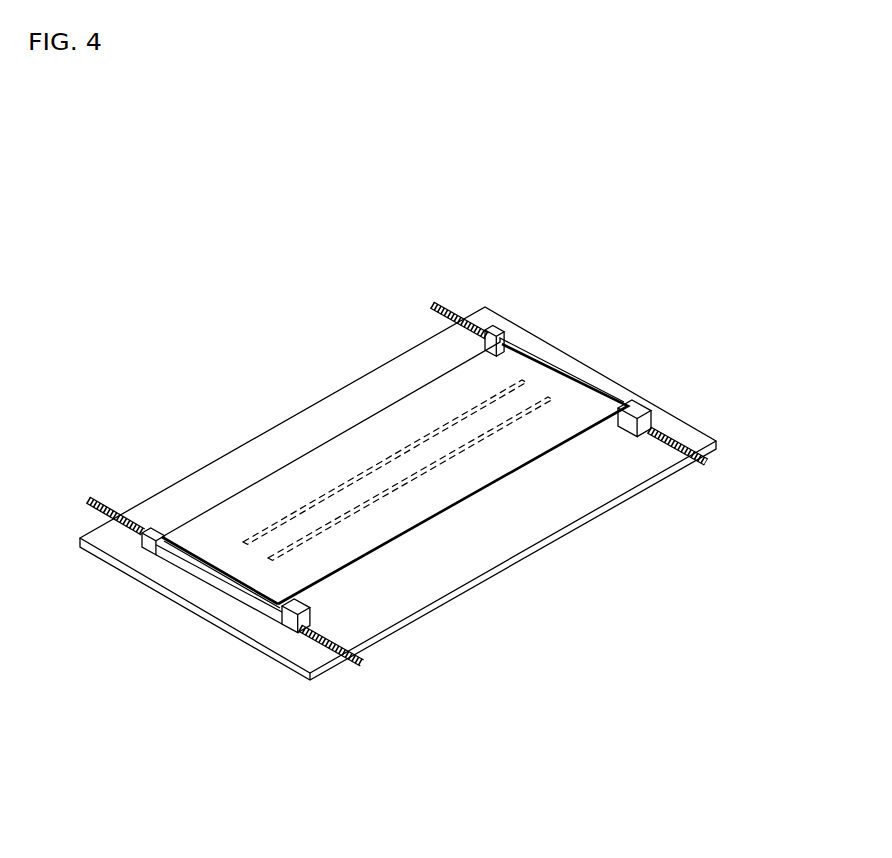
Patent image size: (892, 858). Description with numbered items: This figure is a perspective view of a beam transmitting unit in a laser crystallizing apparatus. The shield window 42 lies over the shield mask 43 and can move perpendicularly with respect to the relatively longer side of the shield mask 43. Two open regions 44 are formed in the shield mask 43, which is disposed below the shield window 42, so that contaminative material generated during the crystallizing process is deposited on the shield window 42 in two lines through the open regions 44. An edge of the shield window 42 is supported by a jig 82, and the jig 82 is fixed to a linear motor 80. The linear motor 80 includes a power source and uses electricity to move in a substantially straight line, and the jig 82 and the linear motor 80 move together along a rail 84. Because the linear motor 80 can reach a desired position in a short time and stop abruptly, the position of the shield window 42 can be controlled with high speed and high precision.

The shield window 42 is at (358, 437).
The shield mask 43 is at (529, 530).
The open regions 44 is at (552, 400).
The linear motor 80 is at (237, 601).
The jig 82 is at (165, 557).
The rail 84 is at (355, 665).